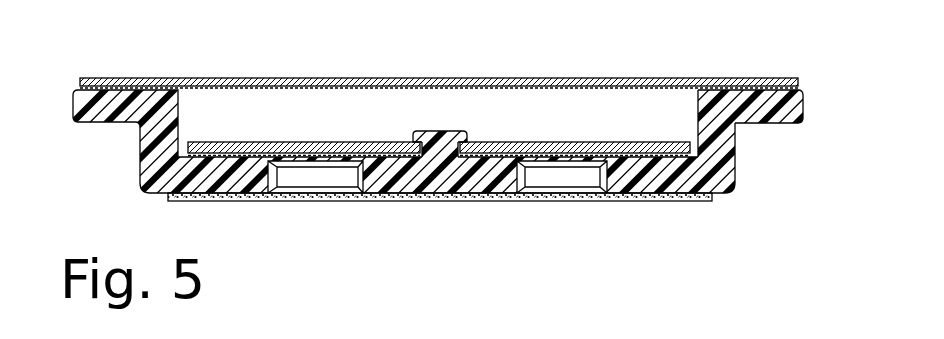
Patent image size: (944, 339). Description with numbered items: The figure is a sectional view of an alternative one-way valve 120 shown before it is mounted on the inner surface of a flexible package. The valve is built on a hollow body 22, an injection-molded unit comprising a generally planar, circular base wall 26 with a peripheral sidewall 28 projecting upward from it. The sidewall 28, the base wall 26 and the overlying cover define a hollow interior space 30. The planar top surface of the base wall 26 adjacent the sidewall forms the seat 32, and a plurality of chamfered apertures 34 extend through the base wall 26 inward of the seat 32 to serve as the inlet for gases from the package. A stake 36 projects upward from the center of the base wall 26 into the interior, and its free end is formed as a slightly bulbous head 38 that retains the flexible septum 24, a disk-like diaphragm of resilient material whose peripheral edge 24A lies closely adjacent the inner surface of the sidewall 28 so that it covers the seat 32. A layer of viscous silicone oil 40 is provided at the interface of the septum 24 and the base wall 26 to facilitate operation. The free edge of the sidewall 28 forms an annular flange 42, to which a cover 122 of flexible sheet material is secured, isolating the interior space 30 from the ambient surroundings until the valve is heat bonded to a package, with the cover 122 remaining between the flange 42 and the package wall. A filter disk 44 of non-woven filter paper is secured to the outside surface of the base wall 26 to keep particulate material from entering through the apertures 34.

The hollow body 22 is at (731, 119).
The septum 24 is at (506, 140).
The peripheral edge of the septum 24A is at (699, 125).
The base wall 26 is at (678, 173).
The sidewall 28 is at (160, 138).
The hollow interior space 30 is at (618, 107).
The seat 32 is at (640, 158).
The chamfered apertures 34 is at (310, 178).
The stake 36 is at (445, 148).
The bulbous head 38 is at (441, 136).
The silicone oil 40 is at (190, 149).
The annular flange 42 is at (758, 112).
The filter disk 44 is at (168, 195).
The one-way valve 120 is at (454, 135).
The cover 122 is at (417, 88).